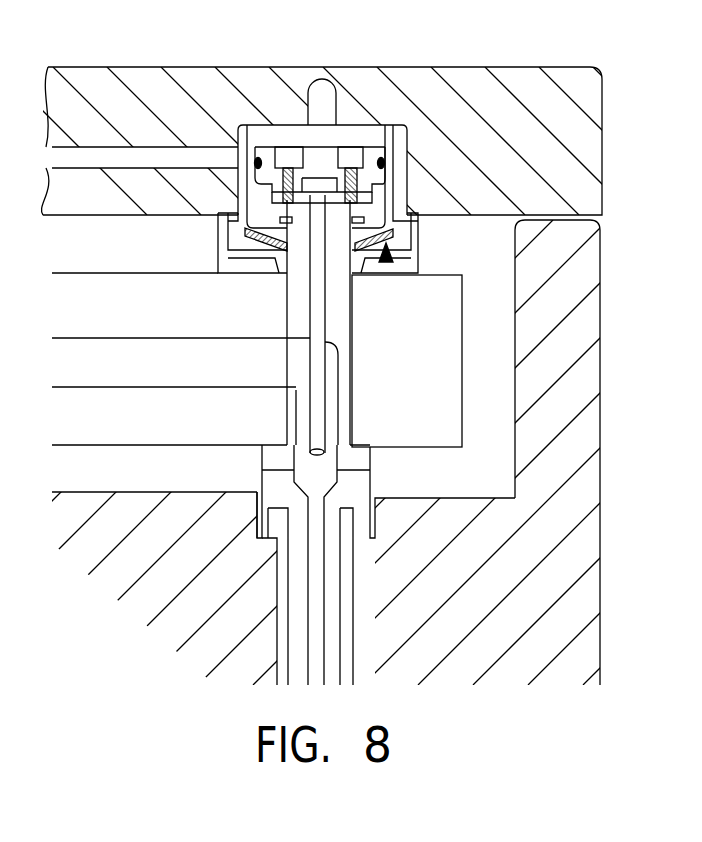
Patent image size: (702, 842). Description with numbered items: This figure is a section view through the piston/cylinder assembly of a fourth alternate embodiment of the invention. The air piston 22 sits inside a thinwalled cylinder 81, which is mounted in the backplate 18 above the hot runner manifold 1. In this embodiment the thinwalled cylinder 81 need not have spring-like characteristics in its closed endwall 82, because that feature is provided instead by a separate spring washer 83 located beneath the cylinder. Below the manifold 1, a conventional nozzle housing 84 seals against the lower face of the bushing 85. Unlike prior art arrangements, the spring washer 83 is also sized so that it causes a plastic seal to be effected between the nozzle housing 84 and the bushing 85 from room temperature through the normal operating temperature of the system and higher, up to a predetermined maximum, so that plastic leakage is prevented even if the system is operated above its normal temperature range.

The backplate 18 is at (530, 100).
The air piston 22 is at (373, 152).
The thinwalled cylinder 81 is at (398, 178).
The closed endwall 82 is at (368, 230).
The spring washer 83 is at (386, 262).
The hot runner manifold 1 is at (445, 315).
The bushing 85 is at (357, 462).
The nozzle housing 84 is at (350, 492).